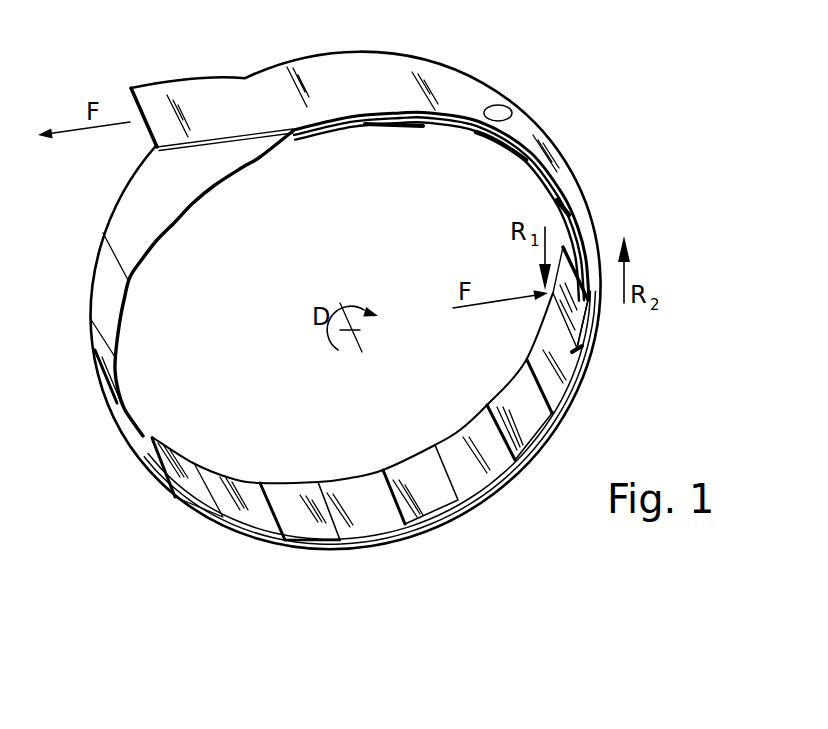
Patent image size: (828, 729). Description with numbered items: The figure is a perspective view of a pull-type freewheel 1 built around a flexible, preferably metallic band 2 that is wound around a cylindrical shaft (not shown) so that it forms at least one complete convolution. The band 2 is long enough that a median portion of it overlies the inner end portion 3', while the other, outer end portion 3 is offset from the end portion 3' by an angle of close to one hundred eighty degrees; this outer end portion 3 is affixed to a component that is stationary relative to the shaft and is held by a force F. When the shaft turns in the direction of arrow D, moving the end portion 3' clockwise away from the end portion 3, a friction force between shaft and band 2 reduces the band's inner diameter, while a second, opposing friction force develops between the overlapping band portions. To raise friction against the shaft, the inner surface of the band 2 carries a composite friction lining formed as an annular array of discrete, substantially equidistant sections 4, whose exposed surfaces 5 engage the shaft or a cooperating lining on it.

The freewheel 1 is at (560, 70).
The flexible band 2 is at (450, 83).
The end portion 3 is at (212, 80).
The end portion 3' is at (619, 343).
The sections 4 is at (573, 323).
The exposed surfaces 5 is at (530, 422).